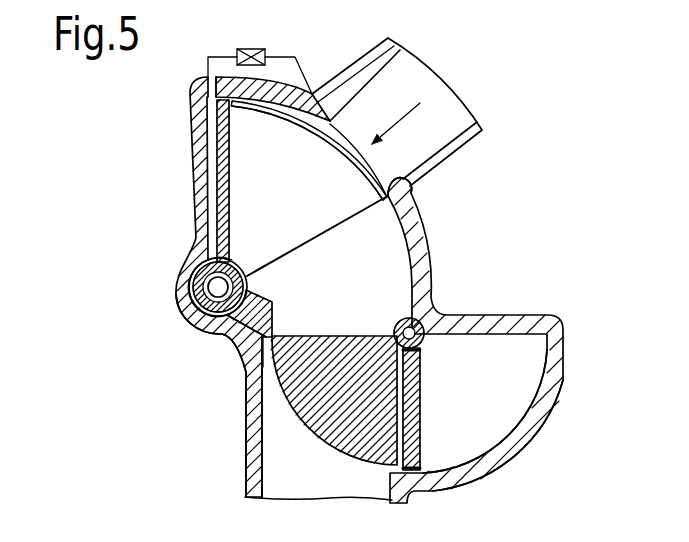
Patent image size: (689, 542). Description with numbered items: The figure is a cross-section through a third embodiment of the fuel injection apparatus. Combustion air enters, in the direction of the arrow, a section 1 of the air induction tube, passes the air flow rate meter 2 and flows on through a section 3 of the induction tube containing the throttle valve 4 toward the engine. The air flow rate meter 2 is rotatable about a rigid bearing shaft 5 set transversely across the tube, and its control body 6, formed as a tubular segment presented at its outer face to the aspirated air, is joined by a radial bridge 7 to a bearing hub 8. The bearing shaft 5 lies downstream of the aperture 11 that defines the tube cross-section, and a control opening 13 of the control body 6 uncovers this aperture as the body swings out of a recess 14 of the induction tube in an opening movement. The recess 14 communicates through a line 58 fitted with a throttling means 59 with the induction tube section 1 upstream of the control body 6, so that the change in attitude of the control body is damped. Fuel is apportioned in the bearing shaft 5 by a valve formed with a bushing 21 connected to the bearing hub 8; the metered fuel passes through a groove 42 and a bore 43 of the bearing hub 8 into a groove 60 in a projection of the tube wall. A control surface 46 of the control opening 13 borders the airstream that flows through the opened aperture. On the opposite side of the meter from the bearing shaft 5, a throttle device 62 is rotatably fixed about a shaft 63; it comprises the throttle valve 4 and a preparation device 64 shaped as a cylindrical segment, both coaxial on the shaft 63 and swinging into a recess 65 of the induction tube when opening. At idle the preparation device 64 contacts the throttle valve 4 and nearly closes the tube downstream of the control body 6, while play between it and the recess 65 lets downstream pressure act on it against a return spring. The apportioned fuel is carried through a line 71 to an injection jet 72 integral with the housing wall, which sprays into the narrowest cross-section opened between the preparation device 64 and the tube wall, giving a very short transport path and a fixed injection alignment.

The section of the air induction tube 1 is at (482, 130).
The air flow rate meter 2 is at (345, 228).
The section of the air induction tube 3 is at (405, 289).
The throttle valve 4 is at (411, 418).
The bearing shaft 5 is at (216, 286).
The control body 6 is at (372, 172).
The radial bridge 7 is at (229, 189).
The bearing hub 8 is at (232, 260).
The aperture 11 is at (410, 183).
The control opening 13 is at (273, 112).
The recess 14 is at (208, 137).
The bushing 21 is at (209, 298).
The groove 42 is at (247, 281).
The bore 43 is at (253, 293).
The control surface 46 is at (308, 128).
The line 58 is at (308, 85).
The throttling means 59 is at (253, 48).
The groove 60 is at (212, 338).
The throttle device 62 is at (306, 437).
The shaft 63 is at (428, 316).
The preparation device 64 is at (352, 440).
The recess 65 is at (533, 362).
The line 71 is at (240, 351).
The injection jet 72 is at (272, 338).